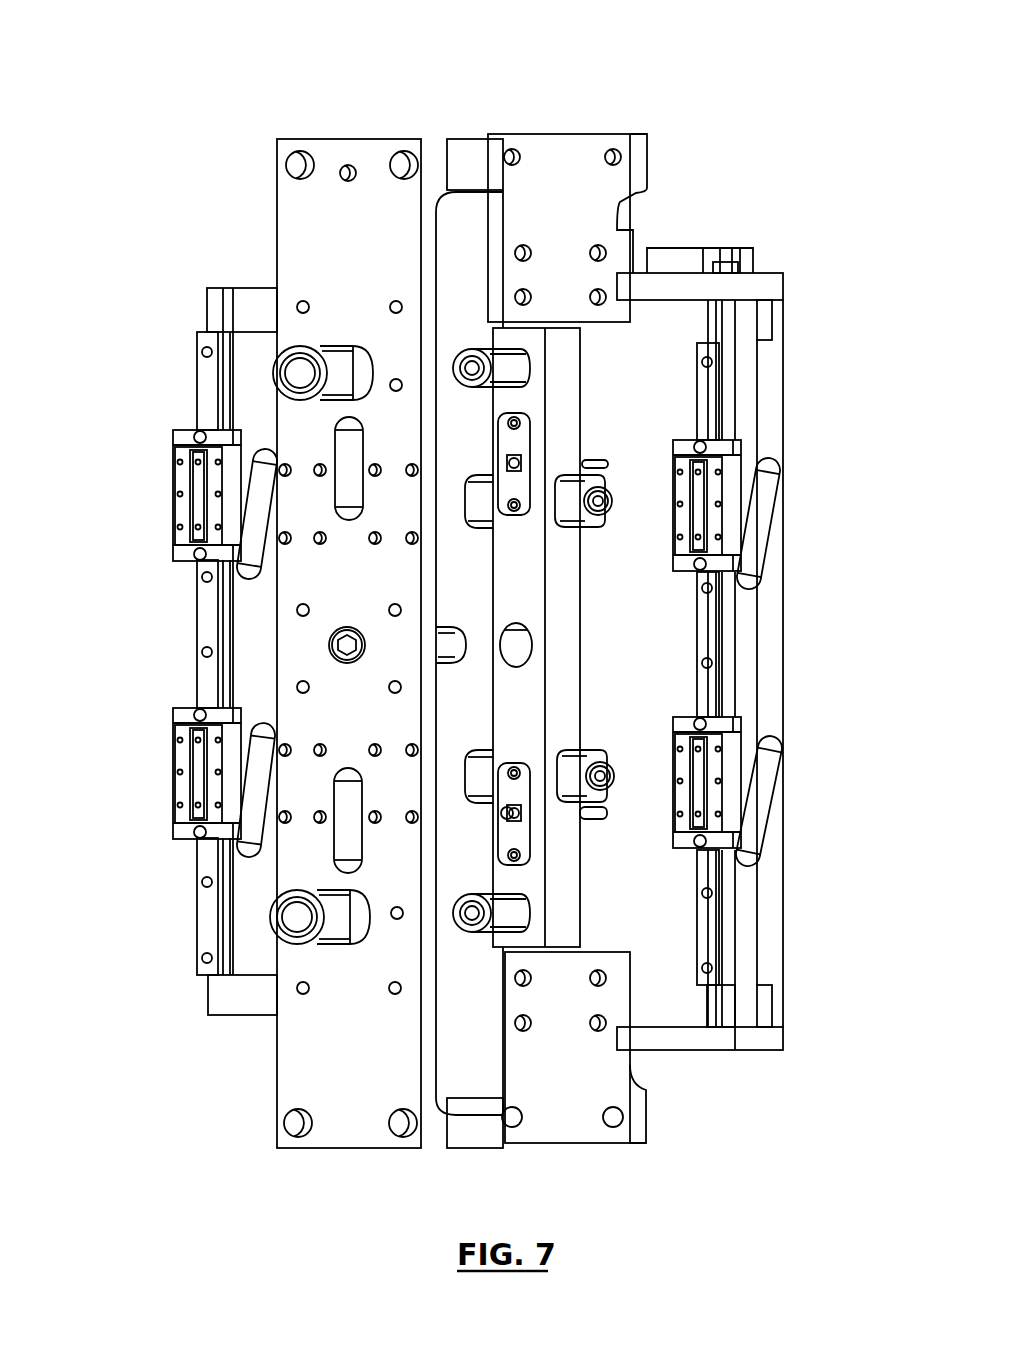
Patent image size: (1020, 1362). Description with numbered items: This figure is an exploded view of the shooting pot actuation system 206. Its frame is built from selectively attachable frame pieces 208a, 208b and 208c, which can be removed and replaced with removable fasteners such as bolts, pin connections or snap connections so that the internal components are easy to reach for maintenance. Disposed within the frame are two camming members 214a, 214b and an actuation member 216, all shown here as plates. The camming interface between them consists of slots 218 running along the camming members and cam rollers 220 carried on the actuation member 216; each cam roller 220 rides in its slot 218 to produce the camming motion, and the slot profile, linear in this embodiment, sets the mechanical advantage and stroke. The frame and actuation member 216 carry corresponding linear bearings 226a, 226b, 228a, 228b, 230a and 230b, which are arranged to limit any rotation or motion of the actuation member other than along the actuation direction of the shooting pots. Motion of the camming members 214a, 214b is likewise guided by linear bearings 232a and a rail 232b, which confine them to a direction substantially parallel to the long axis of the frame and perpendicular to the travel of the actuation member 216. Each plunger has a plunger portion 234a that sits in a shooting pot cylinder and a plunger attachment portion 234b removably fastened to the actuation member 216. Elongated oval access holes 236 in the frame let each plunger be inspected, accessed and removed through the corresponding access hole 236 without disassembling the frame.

The shooting pot actuation system 206 is at (183, 143).
The frame piece 208a is at (360, 139).
The frame piece 208b is at (562, 133).
The frame piece 208c is at (567, 1143).
The camming member 214a is at (783, 327).
The camming member 214b is at (207, 312).
The actuation member 216 is at (580, 431).
The slot 218 is at (760, 521).
The cam roller 220 is at (600, 500).
The linear bearing 226a is at (290, 917).
The linear bearing 226b is at (522, 912).
The linear bearing 228a is at (443, 642).
The linear bearing 228b is at (520, 643).
The linear bearing 230a is at (302, 373).
The linear bearing 230b is at (517, 365).
The linear bearing 232a is at (702, 782).
The rail 232b is at (712, 690).
The plunger portion 234a is at (605, 812).
The plunger attachment portion 234b is at (508, 817).
The access hole 236 is at (347, 800).